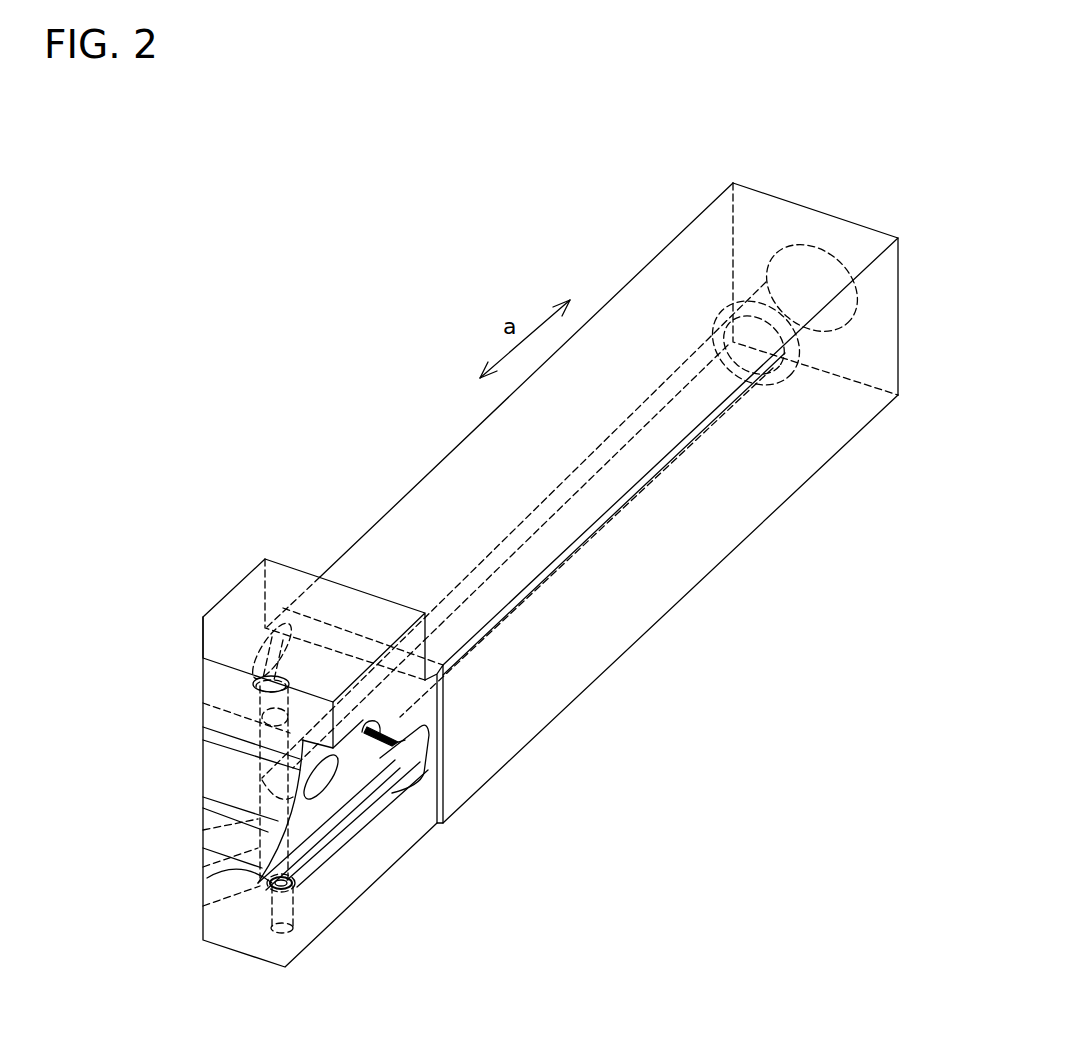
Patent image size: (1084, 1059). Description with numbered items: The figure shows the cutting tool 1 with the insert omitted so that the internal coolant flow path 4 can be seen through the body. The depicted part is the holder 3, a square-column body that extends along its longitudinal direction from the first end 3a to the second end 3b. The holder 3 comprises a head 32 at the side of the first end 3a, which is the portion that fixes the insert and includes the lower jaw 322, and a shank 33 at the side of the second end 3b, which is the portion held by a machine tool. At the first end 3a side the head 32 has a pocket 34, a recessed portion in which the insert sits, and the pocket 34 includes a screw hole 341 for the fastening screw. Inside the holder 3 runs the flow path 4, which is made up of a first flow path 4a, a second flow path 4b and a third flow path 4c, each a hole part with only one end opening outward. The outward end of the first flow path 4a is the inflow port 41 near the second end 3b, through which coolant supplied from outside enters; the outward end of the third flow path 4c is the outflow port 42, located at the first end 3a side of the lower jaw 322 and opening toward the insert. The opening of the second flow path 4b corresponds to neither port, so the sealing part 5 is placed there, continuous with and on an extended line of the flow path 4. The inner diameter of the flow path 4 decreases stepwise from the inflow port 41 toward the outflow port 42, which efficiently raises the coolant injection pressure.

The cutting tool 1 is at (957, 221).
The holder 3 is at (340, 362).
The first end 3a is at (240, 933).
The second end 3b is at (816, 204).
The head 32 is at (256, 581).
The lower jaw 322 is at (330, 893).
The shank 33 is at (455, 445).
The pocket 34 is at (346, 778).
The screw hole 341 is at (323, 778).
The flow path 4 is at (628, 504).
The first flow path 4a is at (733, 405).
The second flow path 4b is at (268, 831).
The third flow path 4c is at (262, 925).
The inflow port 41 is at (768, 300).
The outflow port 42 is at (270, 883).
The sealing part 5 is at (258, 690).